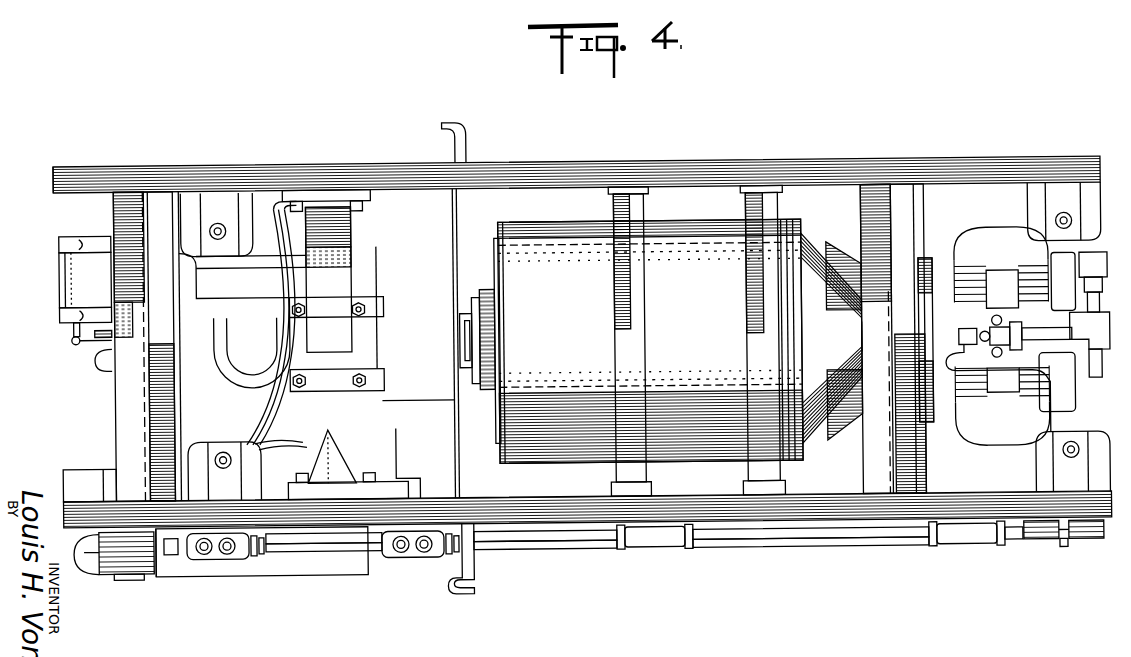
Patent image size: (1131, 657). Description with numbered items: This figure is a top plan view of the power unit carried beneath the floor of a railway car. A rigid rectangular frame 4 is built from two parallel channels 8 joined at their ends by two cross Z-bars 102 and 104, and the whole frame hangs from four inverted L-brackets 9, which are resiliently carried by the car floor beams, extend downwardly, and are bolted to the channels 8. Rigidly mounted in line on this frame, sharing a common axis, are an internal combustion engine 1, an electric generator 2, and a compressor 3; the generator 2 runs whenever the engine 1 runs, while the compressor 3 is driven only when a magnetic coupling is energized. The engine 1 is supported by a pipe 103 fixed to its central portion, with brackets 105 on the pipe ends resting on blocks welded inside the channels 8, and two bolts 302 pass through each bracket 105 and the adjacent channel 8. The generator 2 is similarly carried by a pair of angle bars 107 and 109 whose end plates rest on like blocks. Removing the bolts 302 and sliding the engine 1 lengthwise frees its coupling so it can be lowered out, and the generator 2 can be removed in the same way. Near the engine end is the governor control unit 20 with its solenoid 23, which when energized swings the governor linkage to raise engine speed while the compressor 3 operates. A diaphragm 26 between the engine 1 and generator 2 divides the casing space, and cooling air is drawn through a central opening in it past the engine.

The internal combustion engine 1 is at (298, 580).
The electric generator 2 is at (660, 324).
The compressor 3 is at (978, 244).
The rigid rectangular frame 4 is at (737, 162).
The parallel channels 8 is at (529, 170).
The inverted L-brackets 9 is at (247, 219).
The governor control unit 20 is at (63, 369).
The solenoid 23 is at (62, 274).
The diaphragm 26 is at (470, 566).
The cross Z-bar 102 is at (118, 406).
The pipe 103 is at (333, 258).
The cross Z-bar 104 is at (912, 476).
The end brackets 105 is at (333, 200).
The angle bar 107 is at (636, 333).
The angle bar 109 is at (752, 278).
The bolts 302 is at (348, 462).